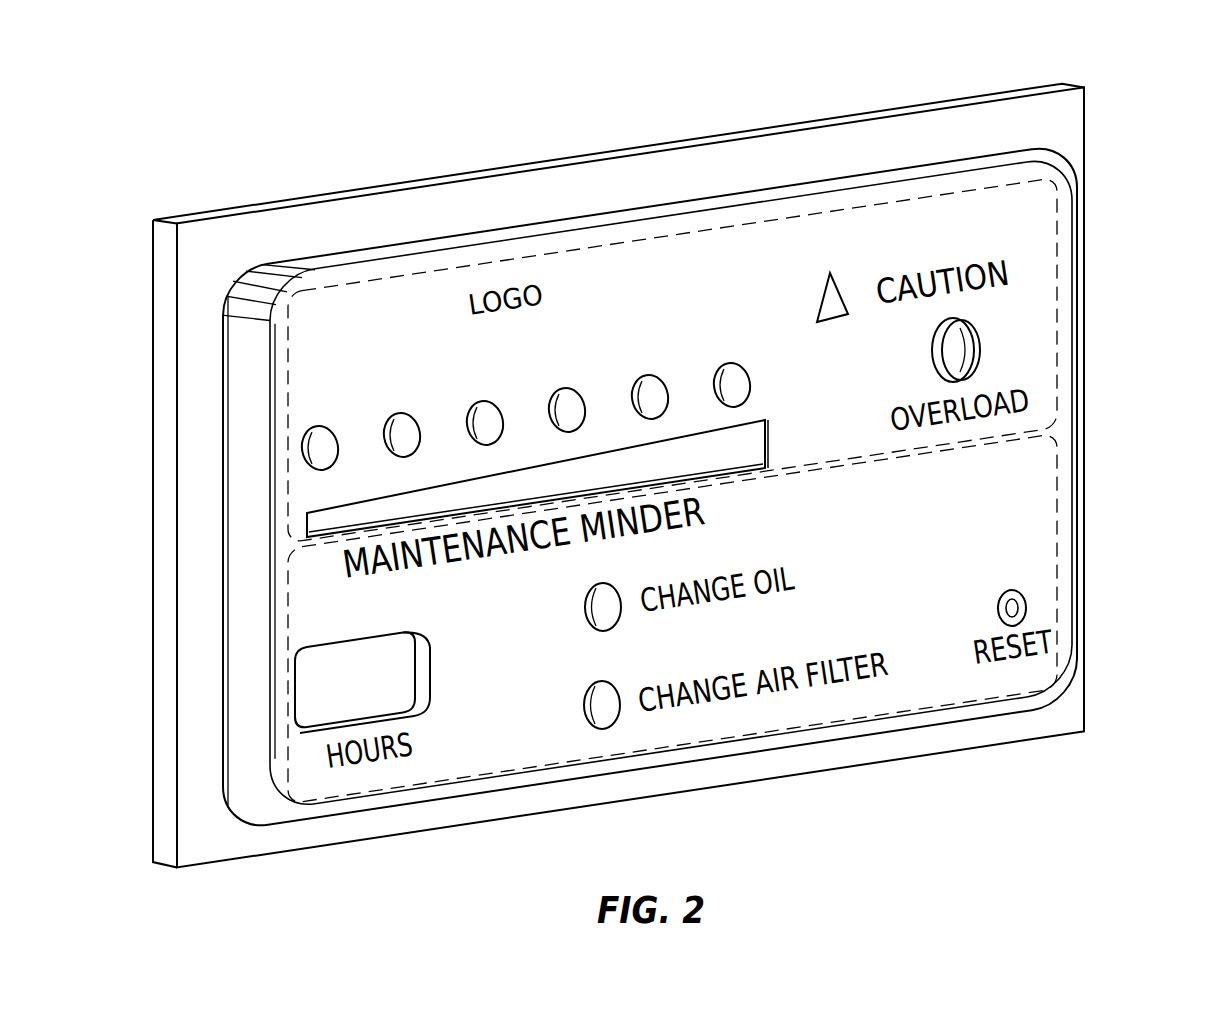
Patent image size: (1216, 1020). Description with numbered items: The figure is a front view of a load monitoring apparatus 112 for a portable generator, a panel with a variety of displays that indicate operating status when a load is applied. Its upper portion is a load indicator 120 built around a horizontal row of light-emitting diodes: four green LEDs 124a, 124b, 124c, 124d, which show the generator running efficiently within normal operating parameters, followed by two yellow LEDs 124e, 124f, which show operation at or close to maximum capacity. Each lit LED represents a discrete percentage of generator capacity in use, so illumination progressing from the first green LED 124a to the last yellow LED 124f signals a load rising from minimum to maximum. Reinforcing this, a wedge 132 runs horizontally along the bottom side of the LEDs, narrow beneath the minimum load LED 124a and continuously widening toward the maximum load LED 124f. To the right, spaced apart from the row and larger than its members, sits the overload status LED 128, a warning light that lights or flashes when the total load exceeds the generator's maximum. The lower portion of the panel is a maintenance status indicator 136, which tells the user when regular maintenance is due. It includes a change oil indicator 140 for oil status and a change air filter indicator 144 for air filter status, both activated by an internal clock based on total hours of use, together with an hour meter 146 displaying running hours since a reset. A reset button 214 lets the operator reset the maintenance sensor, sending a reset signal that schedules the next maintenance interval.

The load monitoring apparatus 112 is at (706, 88).
The load indicator 120 is at (1072, 182).
The green LED 124a is at (310, 428).
The green LED 124b is at (392, 415).
The green LED 124c is at (475, 403).
The green LED 124d is at (557, 390).
The yellow LED 124e is at (640, 377).
The yellow LED 124f is at (722, 368).
The overload status LED 128 is at (980, 336).
The wedge 132 is at (770, 443).
The maintenance status indicator 136 is at (1060, 478).
The change oil indicator 140 is at (615, 585).
The change air filter indicator 144 is at (615, 686).
The hour meter 146 is at (405, 663).
The reset button 214 is at (1012, 590).